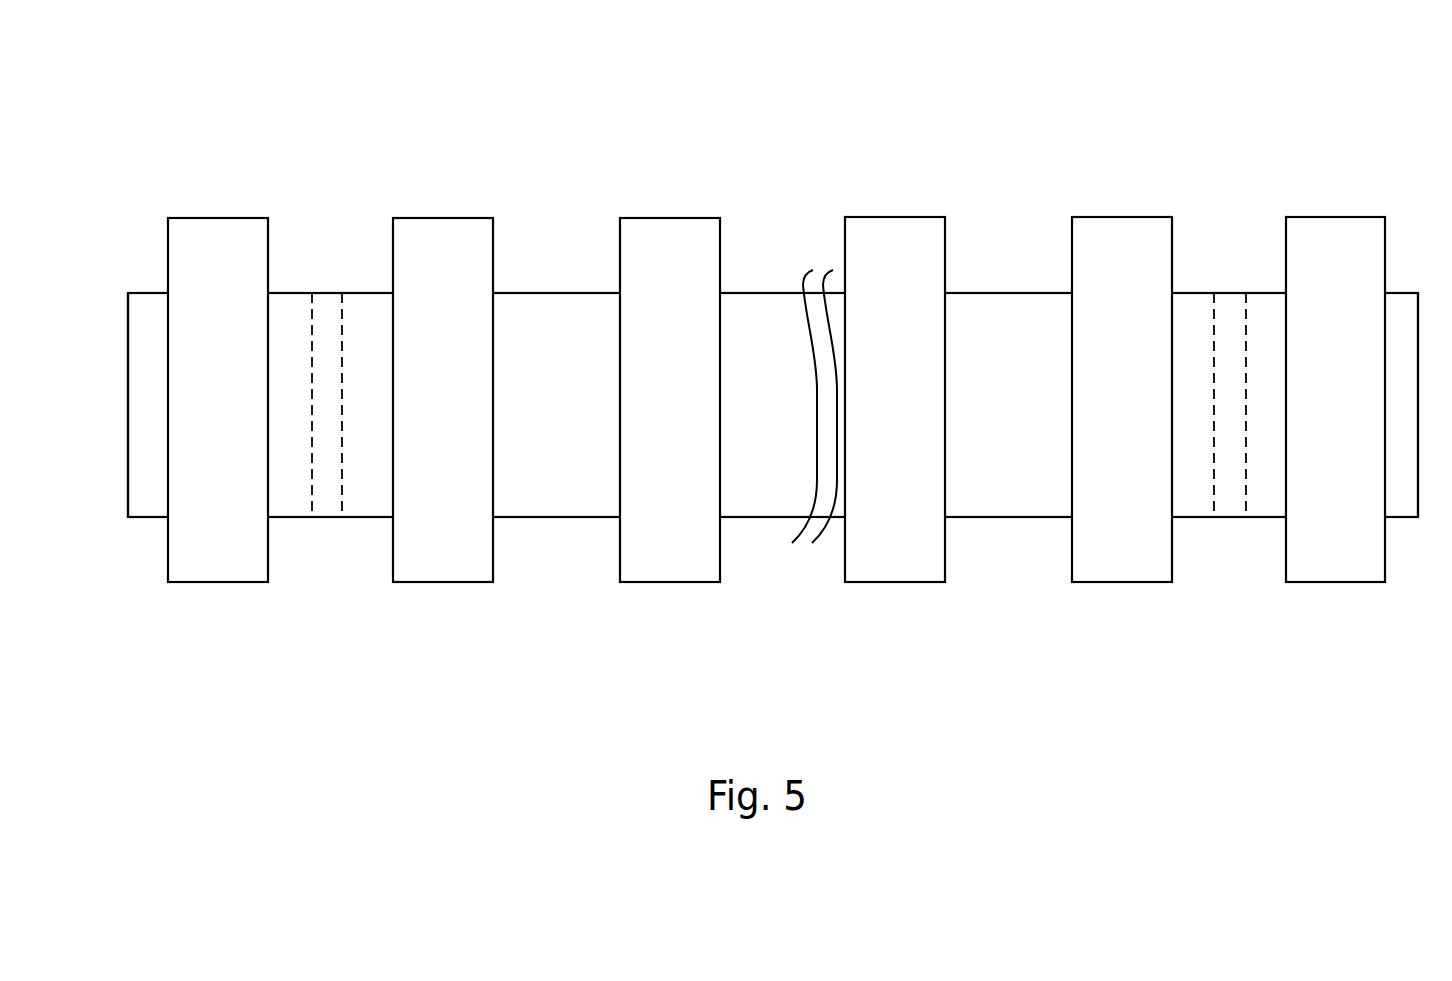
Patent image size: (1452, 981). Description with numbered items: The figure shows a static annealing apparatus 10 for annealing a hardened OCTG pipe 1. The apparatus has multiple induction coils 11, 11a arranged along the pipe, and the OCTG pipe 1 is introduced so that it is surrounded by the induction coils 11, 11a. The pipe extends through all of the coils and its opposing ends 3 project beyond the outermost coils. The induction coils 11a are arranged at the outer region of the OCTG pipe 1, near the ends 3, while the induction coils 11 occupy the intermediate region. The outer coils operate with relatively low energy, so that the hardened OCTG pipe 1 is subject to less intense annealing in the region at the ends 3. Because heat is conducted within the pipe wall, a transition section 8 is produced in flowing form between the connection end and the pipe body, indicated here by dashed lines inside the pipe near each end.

The static annealing apparatus 10 is at (128, 127).
The OCTG pipe 1 is at (762, 498).
The ends of the pipe 3 is at (117, 428).
The transition section 8 is at (328, 495).
The induction coils 11 is at (443, 218).
The outer induction coils 11a is at (227, 218).